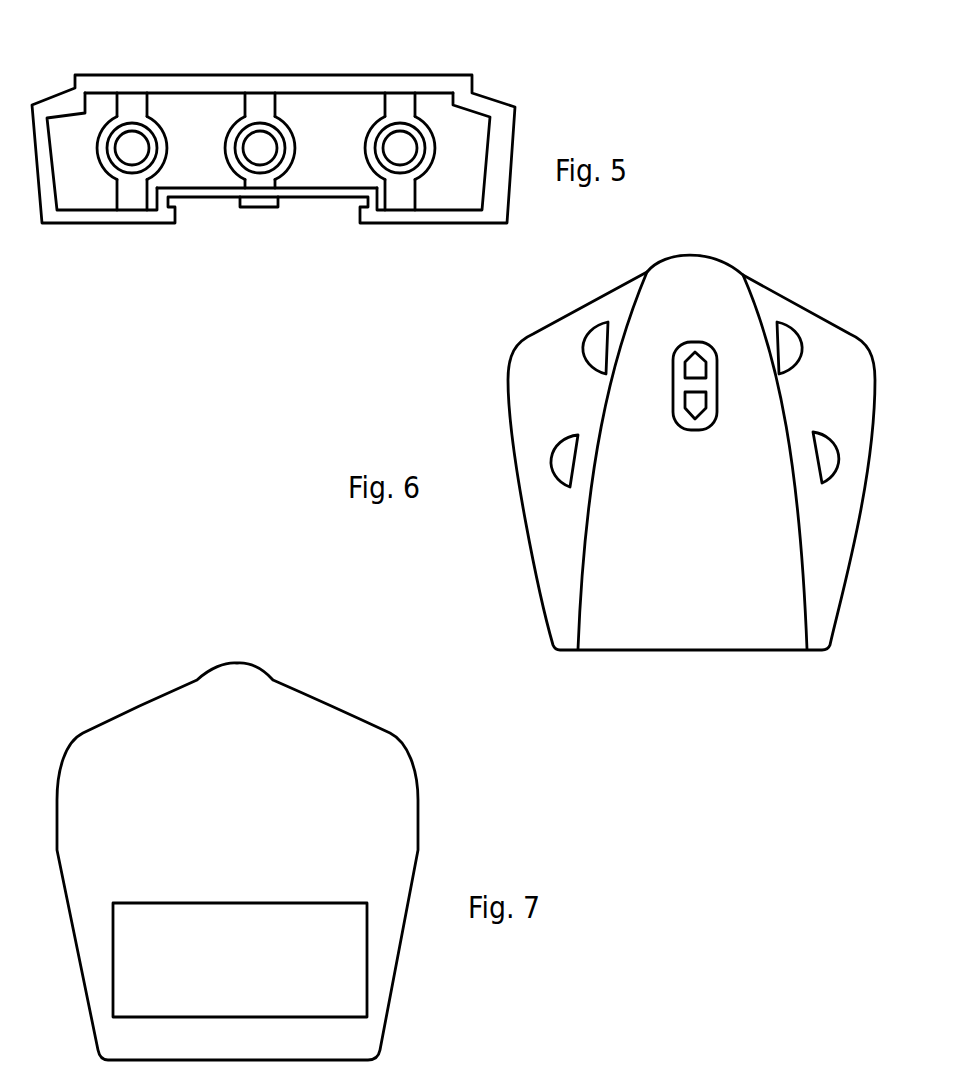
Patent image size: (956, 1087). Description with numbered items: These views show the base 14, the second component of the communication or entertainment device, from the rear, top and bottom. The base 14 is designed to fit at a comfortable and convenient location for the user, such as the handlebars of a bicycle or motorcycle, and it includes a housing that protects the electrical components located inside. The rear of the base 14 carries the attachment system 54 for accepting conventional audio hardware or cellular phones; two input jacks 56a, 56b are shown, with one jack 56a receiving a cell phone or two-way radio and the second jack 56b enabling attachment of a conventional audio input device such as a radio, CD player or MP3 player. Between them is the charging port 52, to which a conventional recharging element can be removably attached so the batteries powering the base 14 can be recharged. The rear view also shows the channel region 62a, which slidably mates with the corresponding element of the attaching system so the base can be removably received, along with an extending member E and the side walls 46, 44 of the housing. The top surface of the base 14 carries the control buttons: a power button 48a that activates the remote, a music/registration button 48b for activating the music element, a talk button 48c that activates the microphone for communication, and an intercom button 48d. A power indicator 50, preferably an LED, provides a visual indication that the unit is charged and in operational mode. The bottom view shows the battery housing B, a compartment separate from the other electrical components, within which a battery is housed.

In FIG. 5, the base 14 is at (507, 82).
In FIG. 6, the base 14 is at (547, 583).
In FIG. 7, the base 14 is at (340, 695).
In FIG. 5, the attachment system 54 is at (387, 65).
In FIG. 5, the left side wall 46 is at (73, 200).
In FIG. 5, the right side wall 44 is at (397, 223).
In FIG. 5, the channel region 62a is at (213, 218).
In FIG. 5, the extending member E is at (277, 207).
In FIG. 5, the input jack 56a is at (118, 137).
In FIG. 5, the charging port 52 is at (253, 142).
In FIG. 5, the input jack 56b is at (417, 165).
In FIG. 6, the power button 48a is at (832, 463).
In FIG. 6, the music/registration button 48b is at (567, 483).
In FIG. 6, the talk button 48c is at (583, 338).
In FIG. 6, the intercom button 48d is at (793, 332).
In FIG. 6, the power indicator 50 is at (700, 428).
In FIG. 7, the battery housing B is at (357, 990).